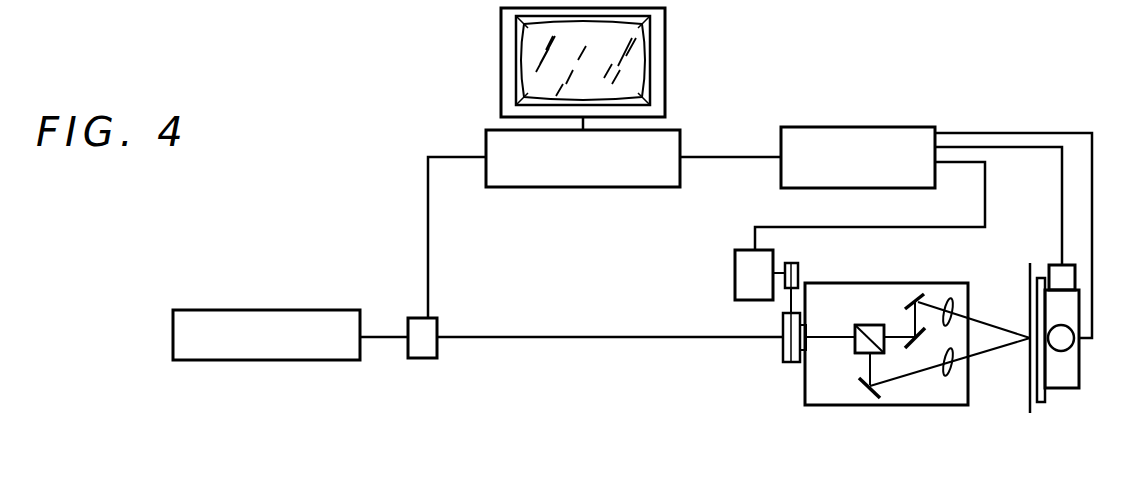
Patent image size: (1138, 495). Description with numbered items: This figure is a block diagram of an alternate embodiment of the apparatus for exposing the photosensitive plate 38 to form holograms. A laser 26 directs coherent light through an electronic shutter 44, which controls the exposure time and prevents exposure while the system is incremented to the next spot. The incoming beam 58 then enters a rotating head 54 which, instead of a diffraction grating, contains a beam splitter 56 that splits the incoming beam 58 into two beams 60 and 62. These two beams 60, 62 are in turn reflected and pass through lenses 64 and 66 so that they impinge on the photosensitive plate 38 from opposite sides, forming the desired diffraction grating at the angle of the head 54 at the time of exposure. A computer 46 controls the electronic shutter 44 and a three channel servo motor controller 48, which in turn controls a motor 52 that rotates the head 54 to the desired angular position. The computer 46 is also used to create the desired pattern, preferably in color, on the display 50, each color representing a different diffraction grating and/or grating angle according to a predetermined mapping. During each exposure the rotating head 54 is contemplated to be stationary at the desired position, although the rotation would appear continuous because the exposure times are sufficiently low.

The laser 26 is at (266, 335).
The photosensitive plate 38 is at (1030, 373).
The electronic shutter 44 is at (410, 322).
The computer 46 is at (583, 158).
The three channel servo motor controller 48 is at (858, 157).
The display 50 is at (640, 73).
The motor 52 is at (737, 268).
The rotating head 54 is at (805, 391).
The beam splitter 56 is at (858, 325).
The incoming beam 58 is at (536, 337).
The beam 60 is at (862, 364).
The beam 62 is at (897, 337).
The lens 64 is at (948, 376).
The lens 66 is at (950, 300).